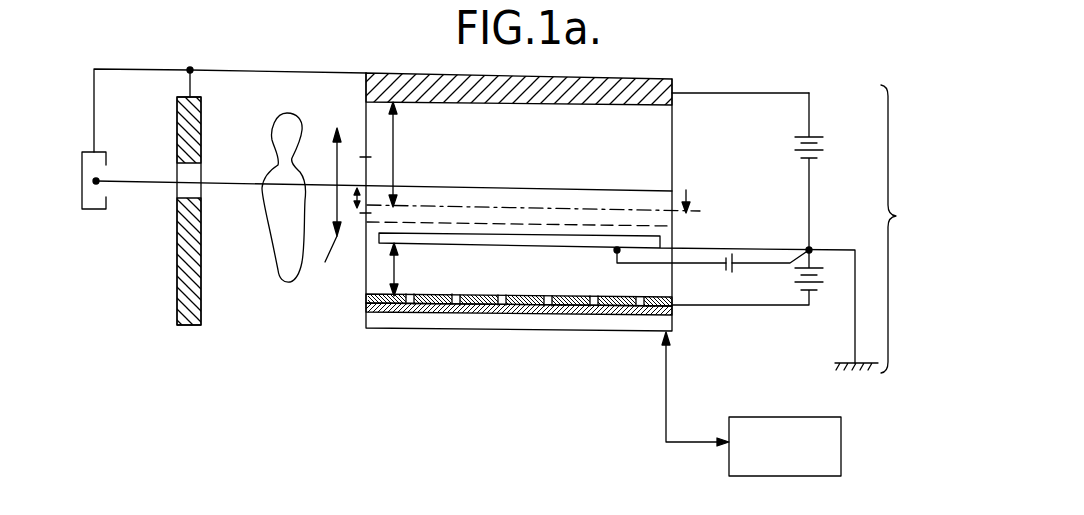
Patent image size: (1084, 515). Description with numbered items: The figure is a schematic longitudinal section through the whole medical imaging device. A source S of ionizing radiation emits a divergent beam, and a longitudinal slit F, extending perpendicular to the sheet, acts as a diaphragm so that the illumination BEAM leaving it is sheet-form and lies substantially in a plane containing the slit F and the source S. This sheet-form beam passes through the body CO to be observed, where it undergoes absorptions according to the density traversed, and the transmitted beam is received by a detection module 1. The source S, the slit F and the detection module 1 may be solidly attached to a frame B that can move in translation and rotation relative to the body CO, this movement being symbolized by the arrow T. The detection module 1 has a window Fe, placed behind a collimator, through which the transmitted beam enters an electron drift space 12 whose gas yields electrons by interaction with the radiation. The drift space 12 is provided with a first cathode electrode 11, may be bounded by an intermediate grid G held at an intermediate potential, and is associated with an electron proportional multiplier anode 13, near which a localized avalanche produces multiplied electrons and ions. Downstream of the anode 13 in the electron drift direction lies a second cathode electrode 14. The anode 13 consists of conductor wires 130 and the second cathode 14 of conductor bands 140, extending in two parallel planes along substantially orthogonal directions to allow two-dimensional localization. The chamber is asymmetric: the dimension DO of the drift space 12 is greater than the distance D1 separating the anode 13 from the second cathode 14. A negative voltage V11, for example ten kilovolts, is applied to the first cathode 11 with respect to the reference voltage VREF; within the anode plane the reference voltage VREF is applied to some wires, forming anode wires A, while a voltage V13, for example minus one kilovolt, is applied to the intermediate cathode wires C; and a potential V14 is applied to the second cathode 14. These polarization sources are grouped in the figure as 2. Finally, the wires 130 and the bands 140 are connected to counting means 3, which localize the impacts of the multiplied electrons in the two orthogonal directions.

The detection module 1 is at (621, 78).
The first cathode electrode 11 is at (653, 96).
The electron drift space 12 is at (661, 152).
The electron proportional multiplier anode 13 is at (635, 241).
The conductor wires 130 is at (532, 234).
The second cathode electrode 14 is at (597, 314).
The conductor bands 140 is at (541, 312).
The voltage supply circuit 2 is at (899, 229).
The counting means 3 is at (800, 435).
The source of ionizing radiation S is at (101, 180).
The frame B is at (117, 69).
The longitudinal slit F is at (203, 178).
The body to be observed CO is at (283, 268).
The window Fe is at (360, 168).
The arrow symbolizing movement T is at (326, 264).
The intermediate grid G is at (378, 223).
The anode wires A is at (600, 181).
The cathode wires C is at (614, 252).
The drift space dimension DO is at (412, 154).
The anode-to-second-cathode distance D1 is at (411, 269).
The first cathode voltage V11 is at (826, 173).
The cathode wire voltage V13 is at (751, 275).
The second cathode potential V14 is at (765, 283).
The reference voltage VREF is at (836, 354).
The ionizing-radiation beam BEAM is at (145, 185).